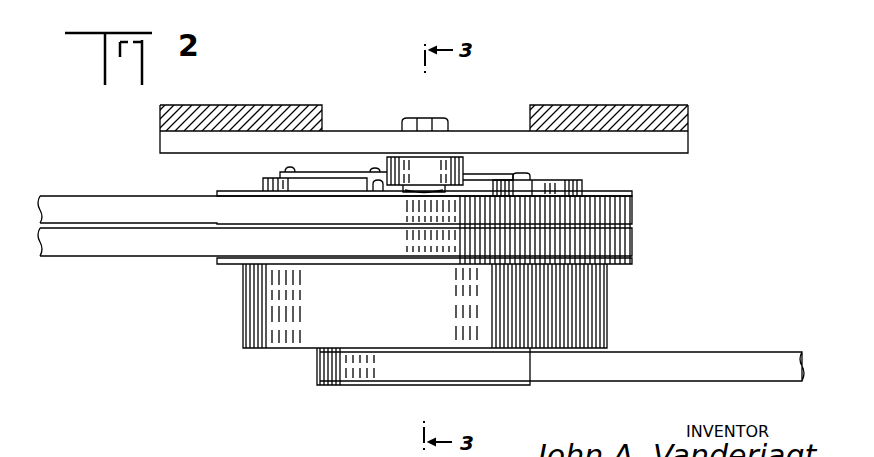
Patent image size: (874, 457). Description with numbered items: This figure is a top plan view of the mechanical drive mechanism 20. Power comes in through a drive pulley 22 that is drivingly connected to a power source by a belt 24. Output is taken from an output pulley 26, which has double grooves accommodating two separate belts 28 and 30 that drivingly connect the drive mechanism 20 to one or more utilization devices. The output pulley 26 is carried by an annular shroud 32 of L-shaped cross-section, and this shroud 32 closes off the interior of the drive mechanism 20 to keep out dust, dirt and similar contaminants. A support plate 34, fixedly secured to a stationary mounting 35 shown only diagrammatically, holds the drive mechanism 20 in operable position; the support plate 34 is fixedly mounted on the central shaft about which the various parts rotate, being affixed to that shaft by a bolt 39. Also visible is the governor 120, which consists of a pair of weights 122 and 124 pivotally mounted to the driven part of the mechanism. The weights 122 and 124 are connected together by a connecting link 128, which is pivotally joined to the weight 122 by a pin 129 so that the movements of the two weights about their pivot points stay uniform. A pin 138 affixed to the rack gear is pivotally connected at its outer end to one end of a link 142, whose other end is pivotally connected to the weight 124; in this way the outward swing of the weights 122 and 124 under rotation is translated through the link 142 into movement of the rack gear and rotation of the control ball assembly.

The mechanical drive mechanism 20 is at (227, 377).
The drive pulley 22 is at (363, 382).
The belt 24 is at (768, 362).
The output pulley 26 is at (220, 261).
The belt 28 is at (68, 242).
The belt 30 is at (66, 202).
The annular shroud 32 is at (263, 320).
The support plate 34 is at (167, 141).
The stationary mounting 35 is at (238, 112).
The bolt 39 is at (428, 122).
The governor 120 is at (224, 161).
The weight 122 is at (583, 191).
The weight 124 is at (263, 187).
The connecting link 128 is at (482, 176).
The pin 129 is at (520, 176).
The pin 138 is at (377, 192).
The link 142 is at (307, 172).